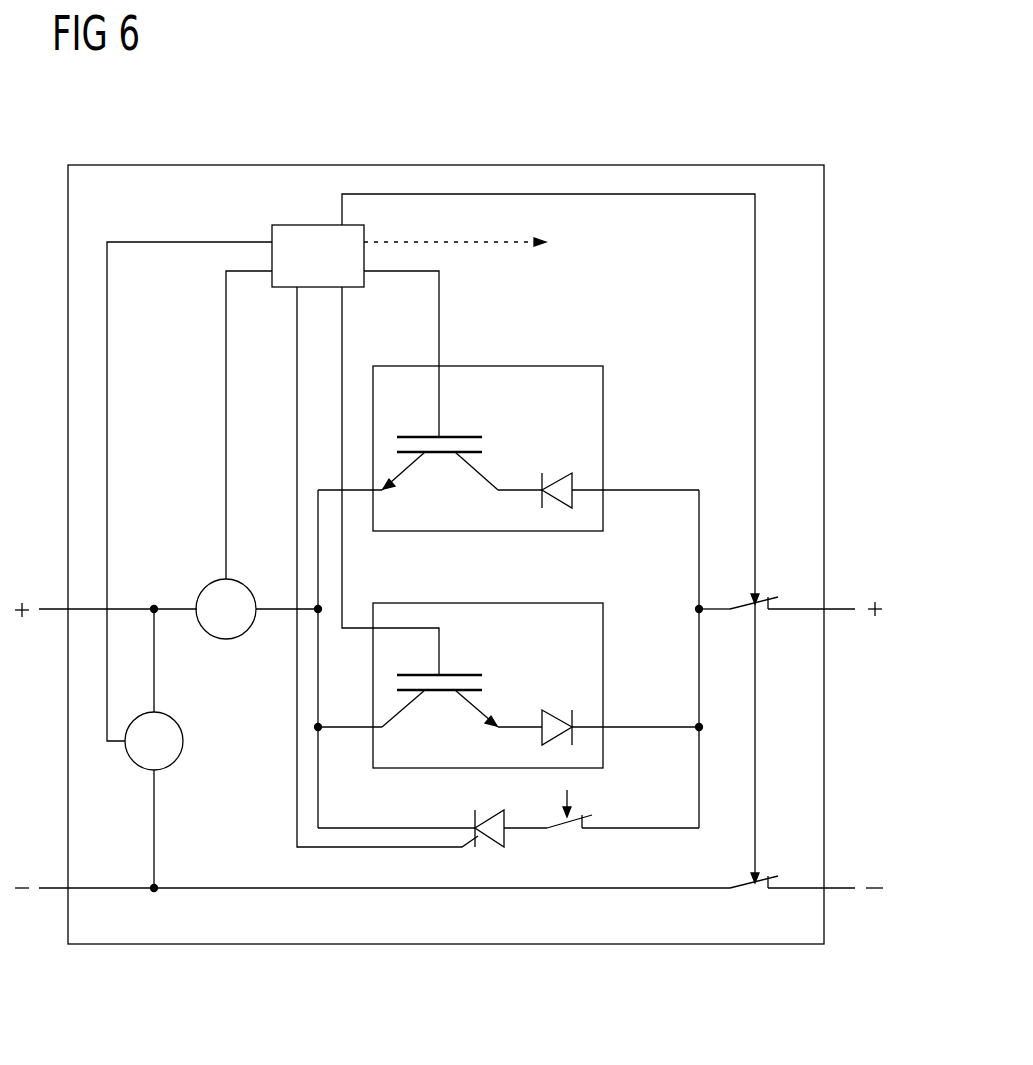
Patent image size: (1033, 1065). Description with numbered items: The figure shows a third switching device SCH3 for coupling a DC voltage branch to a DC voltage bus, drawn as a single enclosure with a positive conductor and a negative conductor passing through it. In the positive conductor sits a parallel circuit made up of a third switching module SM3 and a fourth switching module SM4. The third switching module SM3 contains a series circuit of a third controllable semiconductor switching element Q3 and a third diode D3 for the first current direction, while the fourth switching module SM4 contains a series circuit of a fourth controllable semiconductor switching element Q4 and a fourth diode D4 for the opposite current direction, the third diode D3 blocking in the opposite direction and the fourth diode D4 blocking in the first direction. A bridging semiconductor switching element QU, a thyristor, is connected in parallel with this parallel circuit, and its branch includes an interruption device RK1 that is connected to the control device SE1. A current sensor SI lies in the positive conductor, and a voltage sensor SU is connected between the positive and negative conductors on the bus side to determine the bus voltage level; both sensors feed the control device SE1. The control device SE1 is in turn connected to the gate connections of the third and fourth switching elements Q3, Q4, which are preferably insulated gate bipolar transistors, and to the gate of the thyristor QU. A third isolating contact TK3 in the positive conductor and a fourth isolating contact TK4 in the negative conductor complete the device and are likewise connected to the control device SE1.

The third switching device SCH3 is at (697, 165).
The control device SE1 is at (318, 256).
The interruption device RK1 is at (481, 544).
The current sensor SI is at (226, 609).
The voltage sensor SU is at (154, 741).
The third switching module SM3 is at (603, 403).
The third controllable semiconductor switching element Q3 is at (440, 433).
The third diode D3 is at (557, 468).
The fourth switching module SM4 is at (603, 667).
The fourth controllable semiconductor switching element Q4 is at (440, 671).
The fourth diode D4 is at (557, 705).
The bridging semiconductor switching element QU is at (491, 848).
The third isolating contact TK3 is at (770, 580).
The fourth isolating contact TK4 is at (769, 859).